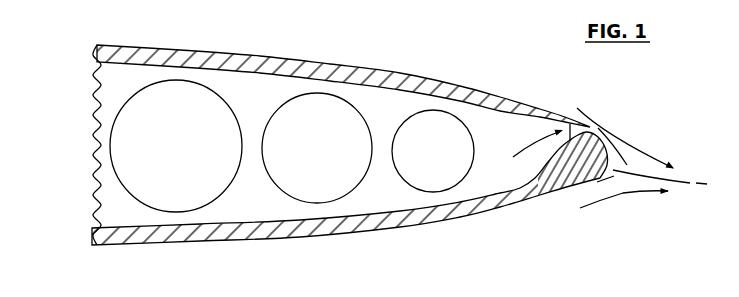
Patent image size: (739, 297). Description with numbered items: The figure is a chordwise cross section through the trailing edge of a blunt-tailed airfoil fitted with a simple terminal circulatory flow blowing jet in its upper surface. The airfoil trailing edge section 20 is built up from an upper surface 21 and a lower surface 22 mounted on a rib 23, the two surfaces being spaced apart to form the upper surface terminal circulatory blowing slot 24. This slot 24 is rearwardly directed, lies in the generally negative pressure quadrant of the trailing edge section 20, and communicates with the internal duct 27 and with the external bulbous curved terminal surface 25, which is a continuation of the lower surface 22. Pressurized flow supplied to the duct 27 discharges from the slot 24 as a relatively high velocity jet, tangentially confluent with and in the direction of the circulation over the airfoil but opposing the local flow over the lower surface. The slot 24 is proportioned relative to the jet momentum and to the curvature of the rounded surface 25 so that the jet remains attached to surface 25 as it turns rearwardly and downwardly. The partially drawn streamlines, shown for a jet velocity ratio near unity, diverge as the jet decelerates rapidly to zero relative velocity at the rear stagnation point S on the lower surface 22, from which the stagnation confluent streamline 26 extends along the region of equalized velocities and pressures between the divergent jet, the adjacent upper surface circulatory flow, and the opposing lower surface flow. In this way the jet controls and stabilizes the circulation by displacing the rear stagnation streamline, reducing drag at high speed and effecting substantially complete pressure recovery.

The airfoil trailing edge section 20 is at (348, 66).
The upper surface 21 is at (173, 47).
The lower surface 22 is at (175, 244).
The rib 23 is at (107, 203).
The upper surface terminal circulatory blowing slot 24 is at (586, 124).
The bulbous curved terminal surface 25 is at (607, 150).
The stagnation confluent streamline 26 is at (687, 183).
The internal duct 27 is at (330, 181).
The rear stagnation point S is at (605, 170).